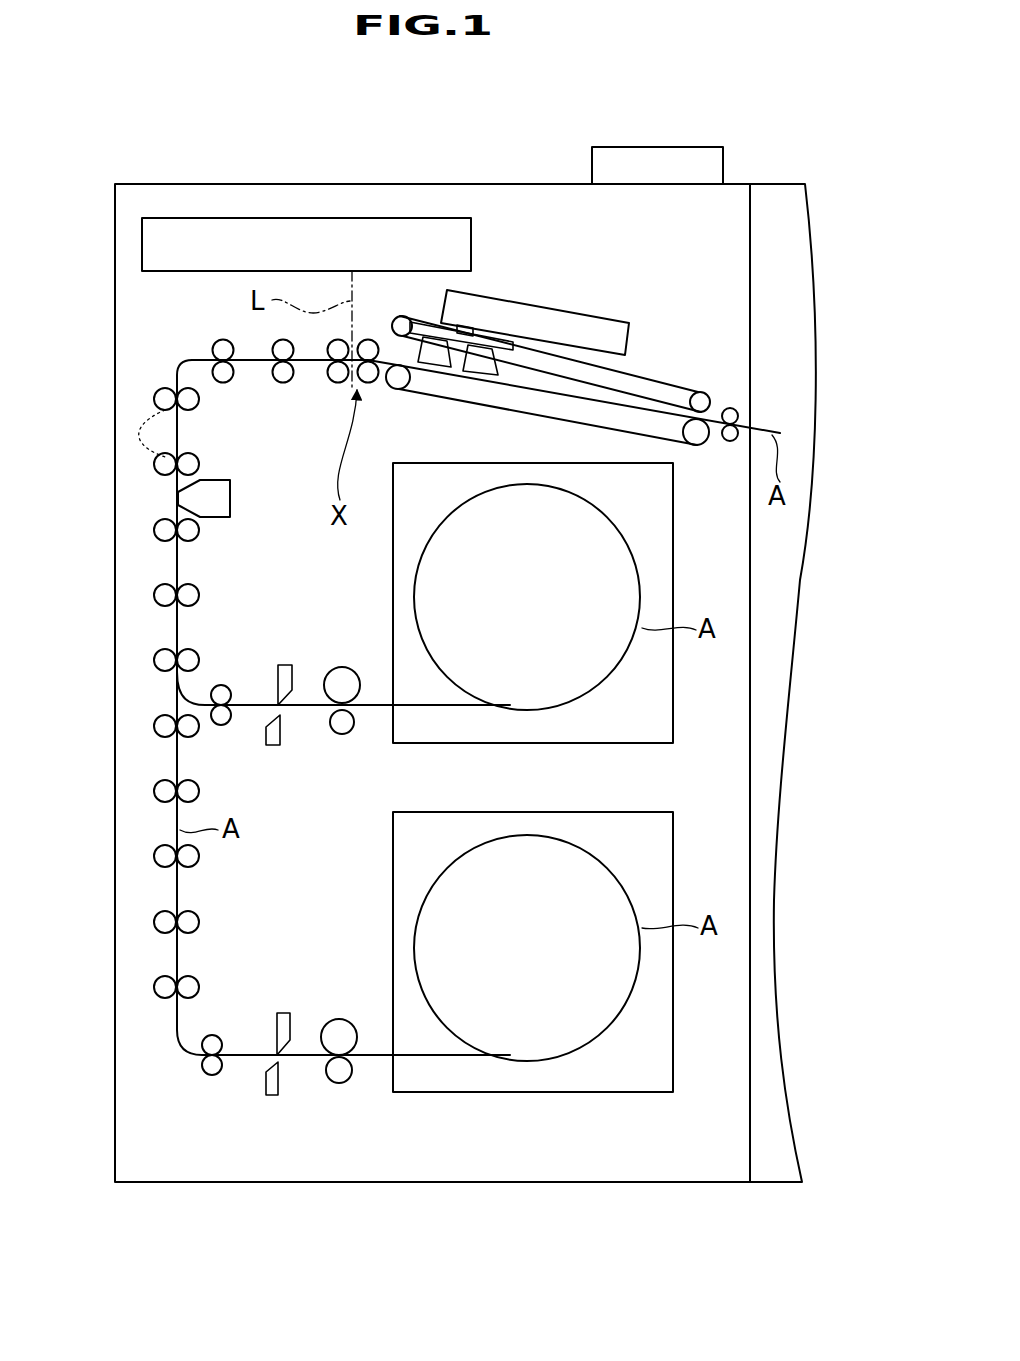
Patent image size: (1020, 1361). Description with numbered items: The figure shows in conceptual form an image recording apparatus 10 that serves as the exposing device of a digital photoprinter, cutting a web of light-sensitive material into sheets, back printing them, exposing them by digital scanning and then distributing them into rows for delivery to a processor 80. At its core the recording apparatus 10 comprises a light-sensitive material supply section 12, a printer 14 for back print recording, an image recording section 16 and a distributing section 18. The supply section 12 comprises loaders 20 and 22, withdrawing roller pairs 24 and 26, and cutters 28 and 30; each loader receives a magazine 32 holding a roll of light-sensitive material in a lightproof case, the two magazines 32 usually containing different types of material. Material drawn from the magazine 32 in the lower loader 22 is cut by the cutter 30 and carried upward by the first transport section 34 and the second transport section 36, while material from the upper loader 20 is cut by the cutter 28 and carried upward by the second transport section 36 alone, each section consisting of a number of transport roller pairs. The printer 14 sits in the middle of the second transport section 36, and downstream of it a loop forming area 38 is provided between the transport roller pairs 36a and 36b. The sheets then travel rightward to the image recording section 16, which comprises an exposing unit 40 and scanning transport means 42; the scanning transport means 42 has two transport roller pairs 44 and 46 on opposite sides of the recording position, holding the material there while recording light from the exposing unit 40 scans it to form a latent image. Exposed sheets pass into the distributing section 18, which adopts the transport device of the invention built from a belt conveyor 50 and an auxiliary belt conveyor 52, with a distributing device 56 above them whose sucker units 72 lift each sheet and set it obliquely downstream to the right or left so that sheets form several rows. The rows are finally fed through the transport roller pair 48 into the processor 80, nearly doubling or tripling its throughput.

The image recording apparatus 10 is at (645, 122).
The light-sensitive material supply section 12 is at (663, 778).
The printer 14 is at (215, 500).
The image recording section 16 is at (203, 320).
The distributing section 18 is at (592, 368).
The loader 20 is at (678, 598).
The loader 22 is at (483, 1100).
The withdrawing roller pair 24 is at (347, 683).
The withdrawing roller pair 26 is at (345, 1035).
The cutter 28 is at (275, 745).
The cutter 30 is at (282, 1012).
The magazine 32 is at (680, 660).
The first transport section 34 is at (220, 873).
The second transport section 36 is at (205, 560).
The transport roller pair 36a is at (165, 399).
The transport roller pair 36b is at (165, 466).
The loop forming area 38 is at (185, 427).
The exposing unit 40 is at (415, 240).
The scanning transport means 42 is at (355, 368).
The transport roller pair 44 is at (337, 377).
The transport roller pair 46 is at (368, 348).
The transport roller pair 48 is at (737, 412).
The belt conveyor 50 is at (655, 437).
The auxiliary belt conveyor 52 is at (698, 390).
The distributing device 56 is at (535, 300).
The sucker units 72 is at (455, 375).
The processor 80 is at (772, 1150).